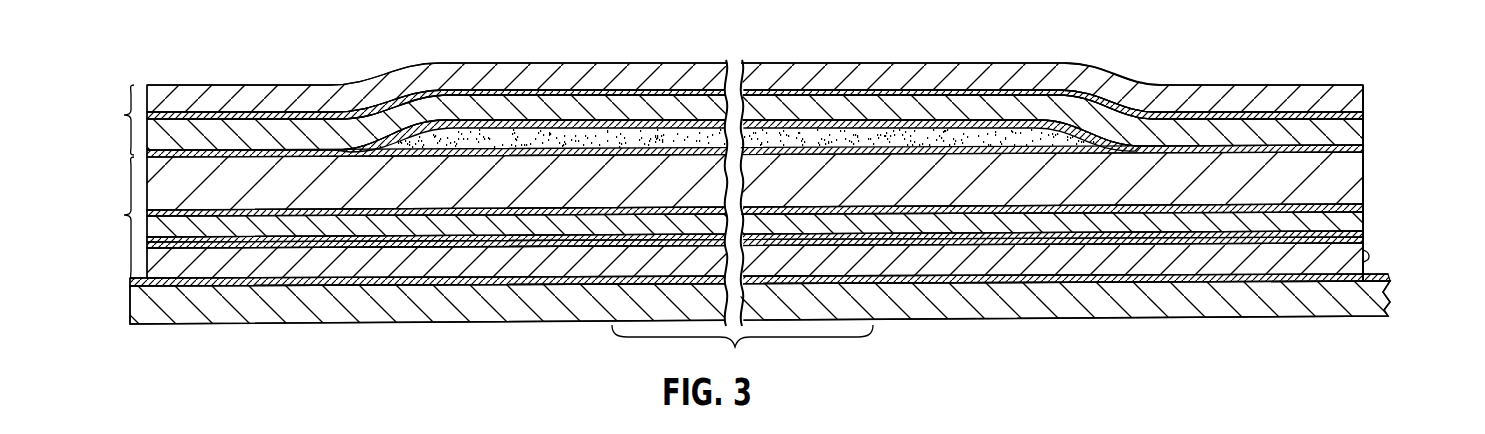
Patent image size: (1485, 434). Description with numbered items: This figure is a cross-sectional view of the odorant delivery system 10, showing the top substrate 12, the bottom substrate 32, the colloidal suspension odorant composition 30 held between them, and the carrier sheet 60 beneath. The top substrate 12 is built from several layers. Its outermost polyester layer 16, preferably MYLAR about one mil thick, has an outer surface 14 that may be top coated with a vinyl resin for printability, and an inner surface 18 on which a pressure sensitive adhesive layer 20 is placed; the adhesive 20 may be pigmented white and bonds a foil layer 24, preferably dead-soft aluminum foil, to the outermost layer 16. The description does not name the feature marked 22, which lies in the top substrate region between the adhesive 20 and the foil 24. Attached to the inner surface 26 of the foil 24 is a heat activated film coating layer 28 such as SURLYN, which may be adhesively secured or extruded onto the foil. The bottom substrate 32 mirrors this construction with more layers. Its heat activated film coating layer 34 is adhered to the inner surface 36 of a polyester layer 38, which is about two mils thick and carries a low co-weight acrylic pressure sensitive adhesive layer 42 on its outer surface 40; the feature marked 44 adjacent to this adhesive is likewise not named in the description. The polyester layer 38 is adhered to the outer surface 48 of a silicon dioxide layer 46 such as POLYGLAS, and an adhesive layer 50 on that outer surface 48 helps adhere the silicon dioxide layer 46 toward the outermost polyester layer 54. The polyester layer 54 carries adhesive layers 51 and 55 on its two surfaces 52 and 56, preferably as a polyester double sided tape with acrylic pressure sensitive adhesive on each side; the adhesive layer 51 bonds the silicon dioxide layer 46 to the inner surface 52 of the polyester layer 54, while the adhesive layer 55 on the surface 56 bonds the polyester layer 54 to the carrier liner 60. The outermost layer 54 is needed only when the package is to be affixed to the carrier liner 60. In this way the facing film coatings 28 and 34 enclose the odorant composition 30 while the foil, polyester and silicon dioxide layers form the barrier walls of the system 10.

The odorant delivery system 10 is at (822, 53).
The top substrate 12 is at (109, 109).
The outer surface 14 is at (1247, 85).
The polyester layer 16 is at (1367, 94).
The inner surface 18 is at (1163, 112).
The adhesive layer 20 is at (1365, 112).
The layer 22 is at (966, 97).
The foil layer 24 is at (1365, 125).
The inner surface 26 is at (1037, 124).
The heat activated film coating layer 28 is at (1365, 147).
The colloidal suspension odorant composition 30 is at (438, 138).
The bottom substrate 32 is at (112, 216).
The heat activated film coating layer 34 is at (1365, 166).
The inner surface 36 is at (942, 155).
The polyester layer 38 is at (1365, 195).
The outer surface 40 is at (983, 204).
The adhesive layer 42 is at (1365, 215).
The layer 44 is at (1033, 212).
The silicon dioxide layer 46 is at (1365, 237).
The outer surface 48 is at (1095, 229).
The adhesive layer 50 is at (1366, 258).
The adhesive layer 51 is at (1382, 283).
The inner surface 52 is at (1150, 243).
The polyester layer 54 is at (1334, 276).
The adhesive layer 55 is at (1394, 290).
The surface 56 is at (1212, 270).
The carrier sheet 60 is at (504, 324).